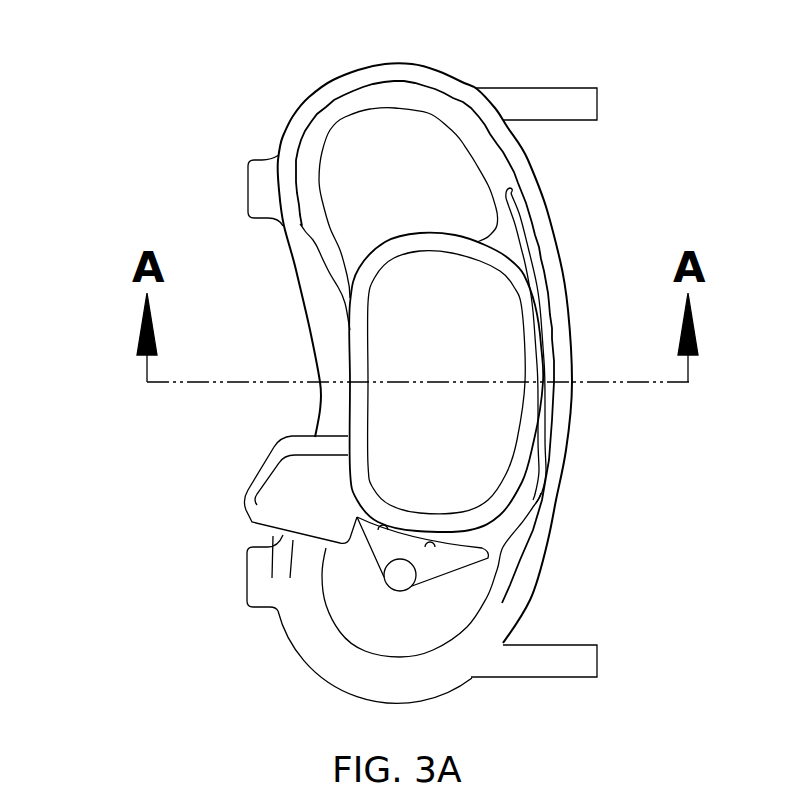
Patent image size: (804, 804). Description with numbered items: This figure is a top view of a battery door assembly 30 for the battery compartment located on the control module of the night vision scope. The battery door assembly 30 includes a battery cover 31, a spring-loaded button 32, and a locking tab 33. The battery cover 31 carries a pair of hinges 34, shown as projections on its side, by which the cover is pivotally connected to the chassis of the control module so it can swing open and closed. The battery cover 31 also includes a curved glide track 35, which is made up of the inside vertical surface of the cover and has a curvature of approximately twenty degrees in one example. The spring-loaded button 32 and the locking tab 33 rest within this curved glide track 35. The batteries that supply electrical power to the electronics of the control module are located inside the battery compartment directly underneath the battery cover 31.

The battery door assembly 30 is at (177, 162).
The battery cover 31 is at (342, 77).
The spring-loaded button 32 is at (462, 460).
The locking tab 33 is at (329, 514).
The hinges 34 is at (575, 88).
The curved glide track 35 is at (528, 242).